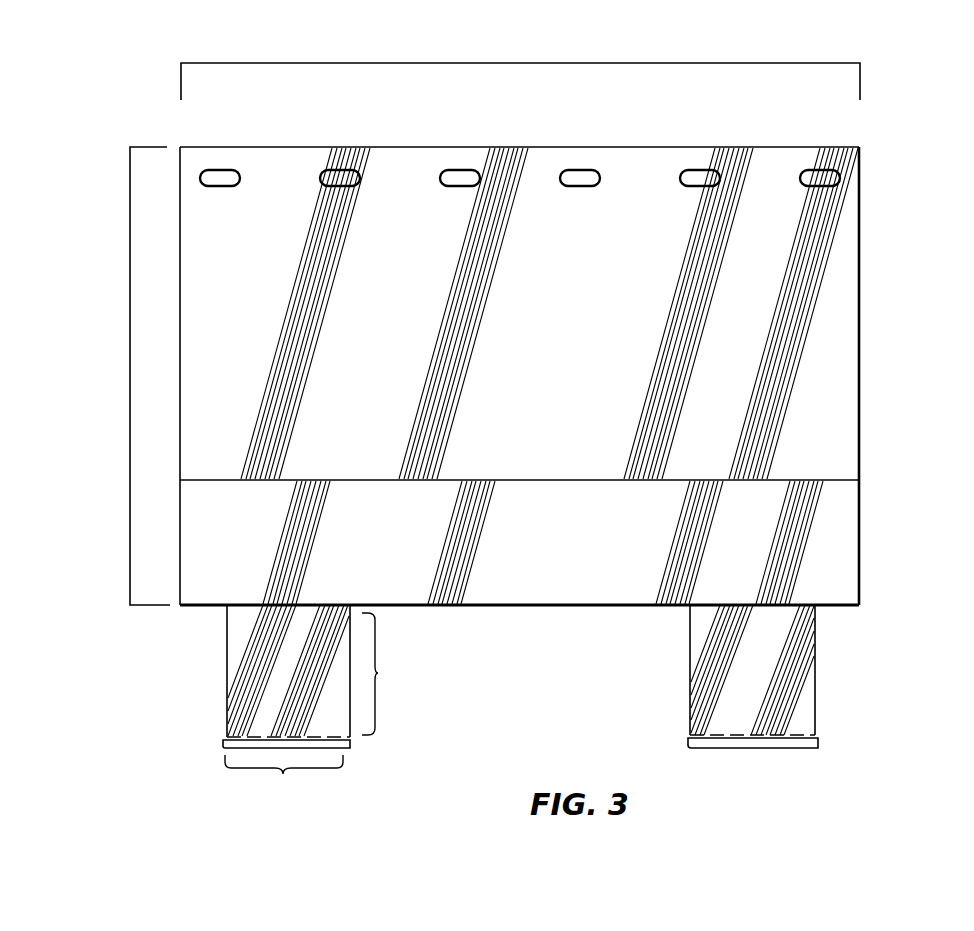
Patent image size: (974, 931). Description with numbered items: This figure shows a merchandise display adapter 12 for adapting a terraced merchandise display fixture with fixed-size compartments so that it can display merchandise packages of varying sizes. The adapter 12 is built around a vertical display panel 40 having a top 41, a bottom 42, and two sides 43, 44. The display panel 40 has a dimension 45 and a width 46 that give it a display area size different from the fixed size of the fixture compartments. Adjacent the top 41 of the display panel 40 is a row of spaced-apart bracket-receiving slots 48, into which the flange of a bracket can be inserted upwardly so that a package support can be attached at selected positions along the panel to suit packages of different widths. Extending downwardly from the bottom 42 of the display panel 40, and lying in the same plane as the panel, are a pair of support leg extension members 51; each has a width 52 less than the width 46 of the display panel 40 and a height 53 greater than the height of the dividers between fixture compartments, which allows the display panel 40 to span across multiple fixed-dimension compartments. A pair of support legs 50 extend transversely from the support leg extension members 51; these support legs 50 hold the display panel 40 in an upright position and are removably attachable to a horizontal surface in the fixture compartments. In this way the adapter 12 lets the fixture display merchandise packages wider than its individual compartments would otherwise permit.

The merchandise display adapter 12 is at (876, 124).
The vertical display panel 40 is at (848, 328).
The top 41 is at (676, 147).
The bottom 42 is at (572, 607).
The side 43 is at (180, 338).
The side 44 is at (862, 430).
The dimension 45 is at (465, 63).
The width 46 is at (612, 63).
The bracket-receiving slots 48 is at (569, 175).
The support leg 50 is at (228, 738).
The support leg extension member 51 is at (268, 665).
The width 52 is at (283, 774).
The height 53 is at (378, 673).